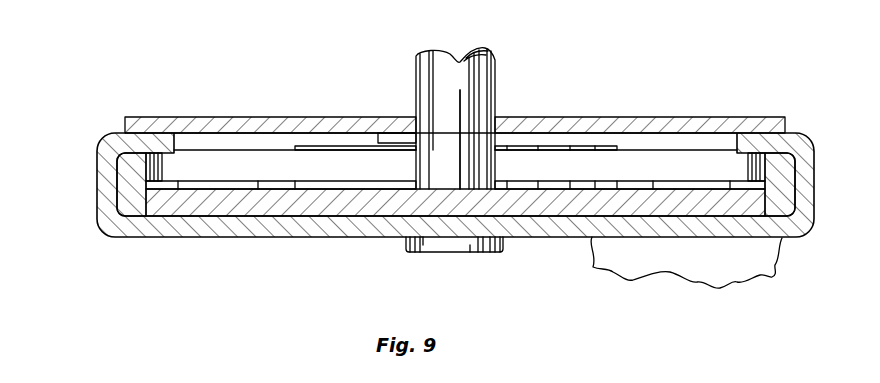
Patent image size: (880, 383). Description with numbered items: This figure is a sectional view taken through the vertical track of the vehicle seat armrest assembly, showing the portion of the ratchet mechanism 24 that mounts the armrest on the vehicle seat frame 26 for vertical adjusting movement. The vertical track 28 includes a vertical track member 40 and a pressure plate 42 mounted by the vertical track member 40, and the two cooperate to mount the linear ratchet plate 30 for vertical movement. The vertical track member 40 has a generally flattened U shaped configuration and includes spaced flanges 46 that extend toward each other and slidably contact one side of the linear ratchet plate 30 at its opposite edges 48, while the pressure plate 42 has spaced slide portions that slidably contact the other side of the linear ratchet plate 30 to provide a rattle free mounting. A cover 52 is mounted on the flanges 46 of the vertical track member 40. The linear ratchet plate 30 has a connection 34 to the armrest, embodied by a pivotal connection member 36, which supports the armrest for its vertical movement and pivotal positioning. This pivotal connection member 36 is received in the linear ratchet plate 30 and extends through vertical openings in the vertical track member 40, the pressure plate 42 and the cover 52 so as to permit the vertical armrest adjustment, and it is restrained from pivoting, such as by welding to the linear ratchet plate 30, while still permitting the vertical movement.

The ratchet mechanism 24 is at (282, 149).
The vehicle seat frame 26 is at (690, 253).
The vertical track 28 is at (97, 185).
The linear ratchet plate 30 is at (333, 167).
The connection 34 is at (497, 88).
The pivotal connection member 36 is at (453, 92).
The vertical track member 40 is at (305, 227).
The pressure plate 42 is at (213, 200).
The spaced flanges 46 is at (157, 143).
The opposite edges 48 is at (155, 167).
The cover 52 is at (598, 120).